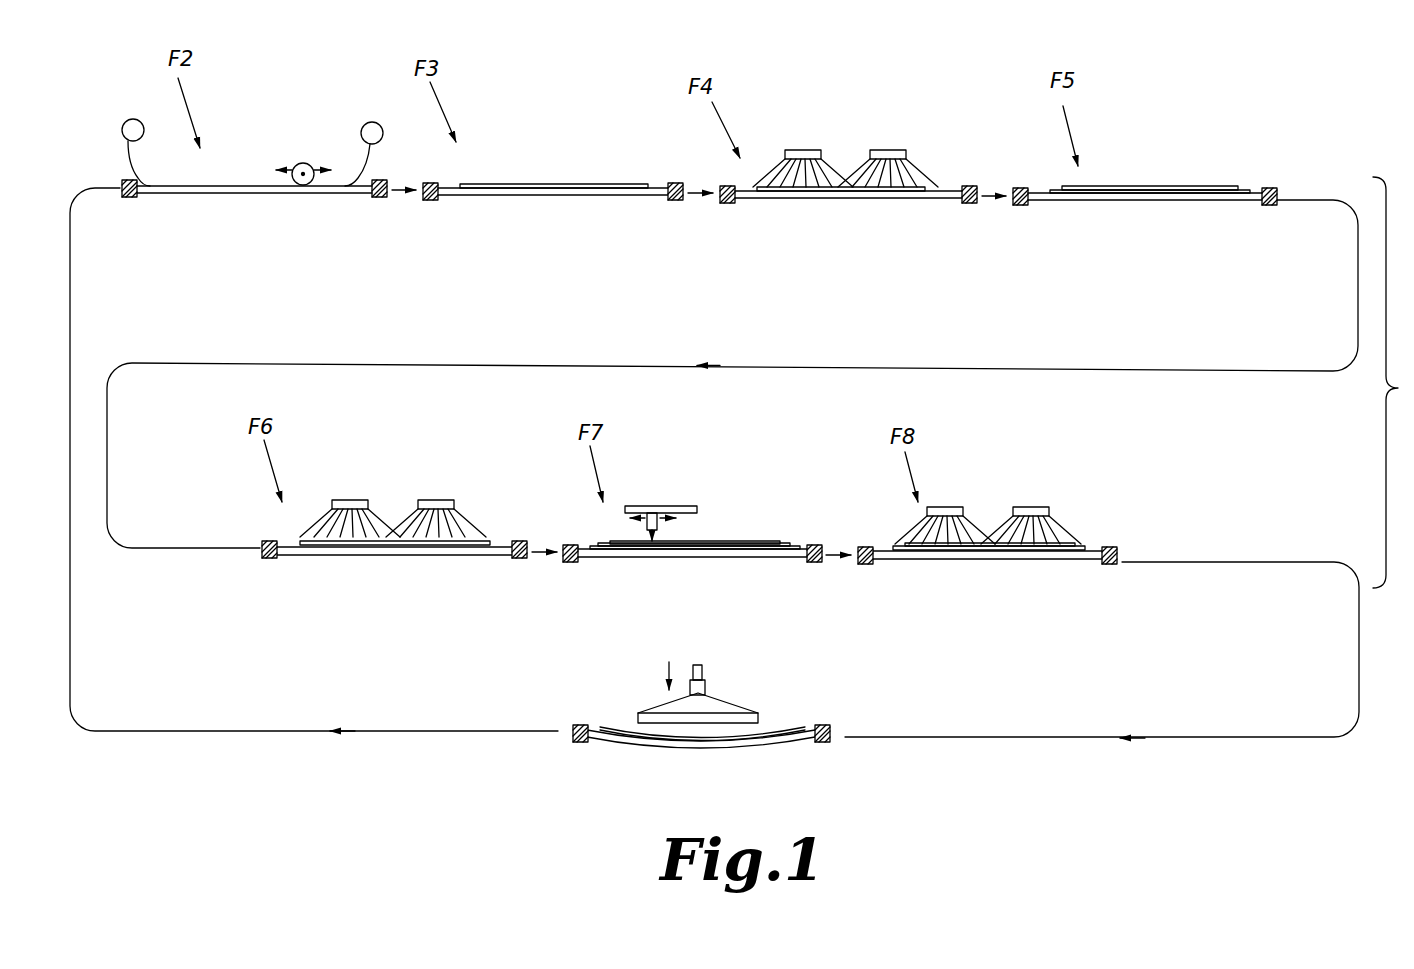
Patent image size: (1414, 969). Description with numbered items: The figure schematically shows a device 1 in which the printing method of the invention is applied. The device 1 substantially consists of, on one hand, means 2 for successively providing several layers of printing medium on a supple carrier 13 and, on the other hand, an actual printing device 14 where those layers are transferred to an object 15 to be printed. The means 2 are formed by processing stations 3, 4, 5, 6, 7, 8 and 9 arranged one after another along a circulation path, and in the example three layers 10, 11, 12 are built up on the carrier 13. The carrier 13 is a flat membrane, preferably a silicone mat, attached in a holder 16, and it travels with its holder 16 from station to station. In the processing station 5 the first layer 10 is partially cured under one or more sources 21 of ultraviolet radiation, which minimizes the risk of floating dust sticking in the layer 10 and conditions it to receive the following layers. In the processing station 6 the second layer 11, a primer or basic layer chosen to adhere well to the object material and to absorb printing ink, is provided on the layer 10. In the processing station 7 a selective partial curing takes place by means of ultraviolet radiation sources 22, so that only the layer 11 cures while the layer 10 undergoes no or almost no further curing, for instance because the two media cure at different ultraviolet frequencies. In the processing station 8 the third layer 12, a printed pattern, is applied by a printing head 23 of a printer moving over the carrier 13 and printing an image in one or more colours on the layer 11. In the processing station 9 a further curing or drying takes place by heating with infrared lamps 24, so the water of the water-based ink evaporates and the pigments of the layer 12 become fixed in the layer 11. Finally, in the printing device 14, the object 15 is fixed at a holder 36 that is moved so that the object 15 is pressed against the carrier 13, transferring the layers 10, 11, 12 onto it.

The device 1 is at (1287, 147).
The means for providing layers of printing medium 2 is at (1393, 382).
The processing station 3 is at (232, 150).
The processing station 4 is at (513, 155).
The processing station 5 is at (840, 125).
The processing station 6 is at (1133, 146).
The processing station 7 is at (393, 476).
The processing station 8 is at (670, 488).
The processing station 9 is at (979, 482).
The first layer of printing medium 10 is at (1236, 190).
The second layer of printing medium 11 is at (1175, 186).
The third layer of printing medium 12 is at (752, 545).
The carrier 13 is at (1140, 200).
The printing device 14 is at (736, 660).
The object 15 is at (760, 723).
The holder 16 is at (673, 203).
The source of ultraviolet radiation 21 is at (800, 150).
The ultraviolet radiation source 22 is at (345, 500).
The printing head 23 is at (700, 525).
The infrared lamp 24 is at (937, 512).
The holder 36 is at (730, 702).